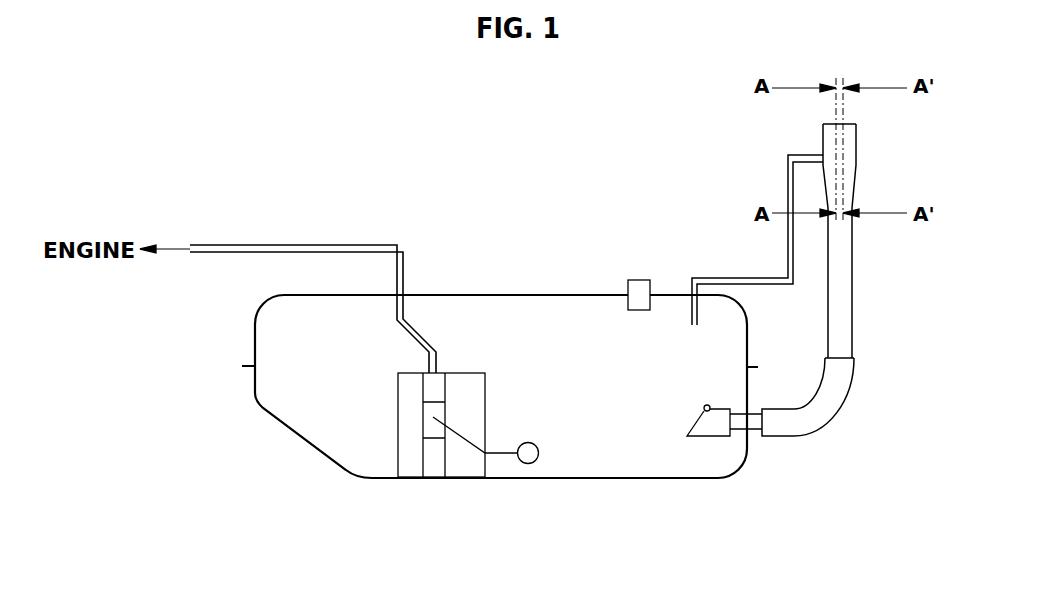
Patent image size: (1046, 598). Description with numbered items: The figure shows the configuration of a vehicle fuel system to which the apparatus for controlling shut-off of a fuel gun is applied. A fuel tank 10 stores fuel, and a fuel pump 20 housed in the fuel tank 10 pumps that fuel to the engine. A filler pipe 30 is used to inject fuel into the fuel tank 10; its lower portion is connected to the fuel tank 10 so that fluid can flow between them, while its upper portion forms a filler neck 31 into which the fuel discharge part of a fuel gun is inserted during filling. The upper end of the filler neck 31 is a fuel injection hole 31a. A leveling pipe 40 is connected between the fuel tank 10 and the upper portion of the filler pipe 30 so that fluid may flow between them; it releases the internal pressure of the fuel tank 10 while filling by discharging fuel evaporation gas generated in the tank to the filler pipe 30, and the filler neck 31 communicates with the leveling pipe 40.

The fuel tank 10 is at (505, 294).
The fuel pump 20 is at (485, 397).
The filler pipe 30 is at (868, 308).
The filler neck 31 is at (857, 148).
The fuel injection hole 31a is at (851, 124).
The leveling pipe 40 is at (788, 245).